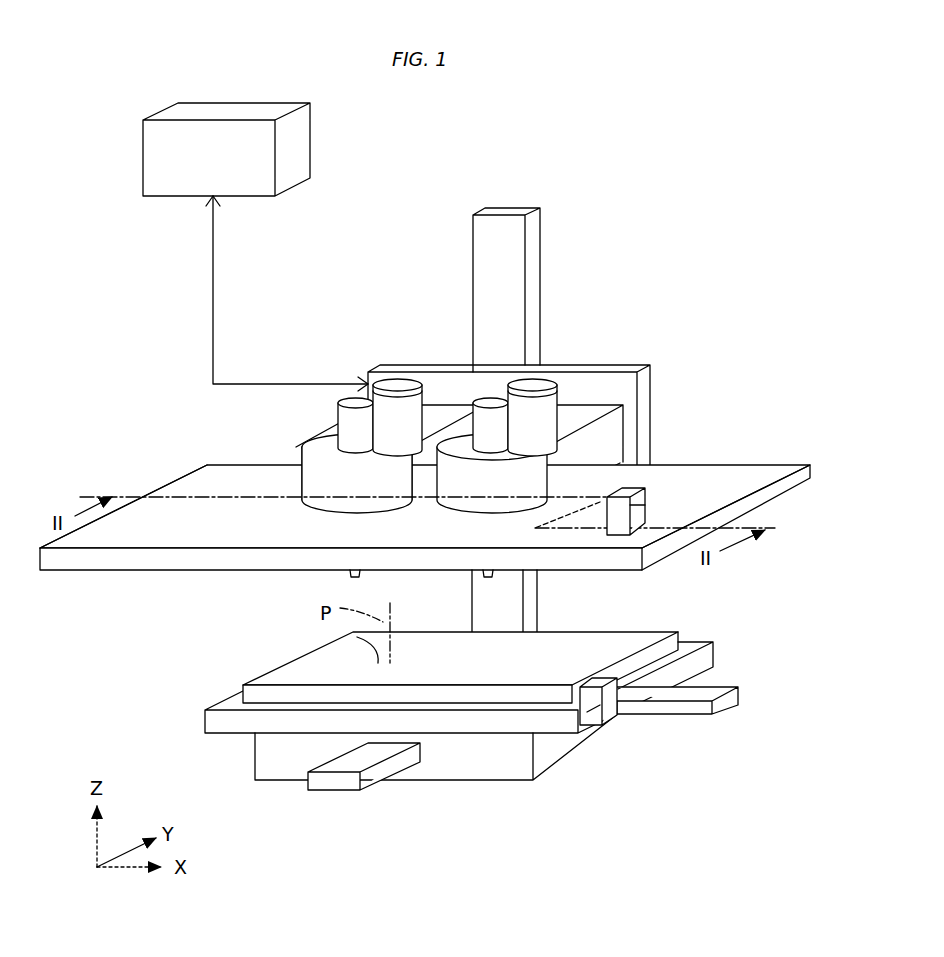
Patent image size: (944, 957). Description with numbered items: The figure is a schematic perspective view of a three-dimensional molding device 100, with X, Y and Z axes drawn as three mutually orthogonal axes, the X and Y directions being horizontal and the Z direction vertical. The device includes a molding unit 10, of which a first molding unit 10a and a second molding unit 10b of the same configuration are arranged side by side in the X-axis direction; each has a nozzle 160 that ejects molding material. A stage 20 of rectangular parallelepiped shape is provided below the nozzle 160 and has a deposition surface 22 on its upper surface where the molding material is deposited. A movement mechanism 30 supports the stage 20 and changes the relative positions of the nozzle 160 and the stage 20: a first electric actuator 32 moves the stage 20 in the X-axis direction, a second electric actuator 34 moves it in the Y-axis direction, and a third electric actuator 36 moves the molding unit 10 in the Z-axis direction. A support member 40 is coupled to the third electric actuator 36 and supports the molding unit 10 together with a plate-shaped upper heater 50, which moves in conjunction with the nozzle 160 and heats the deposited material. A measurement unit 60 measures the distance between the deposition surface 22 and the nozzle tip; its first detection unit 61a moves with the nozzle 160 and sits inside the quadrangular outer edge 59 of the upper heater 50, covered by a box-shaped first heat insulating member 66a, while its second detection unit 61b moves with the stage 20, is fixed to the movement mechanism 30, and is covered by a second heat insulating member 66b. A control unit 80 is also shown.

The three-dimensional molding device 100 is at (748, 289).
The control unit 80 is at (291, 147).
The third electric actuator 36 is at (498, 283).
The support member 40 is at (641, 356).
The molding unit 10 is at (474, 415).
The first molding unit 10a is at (312, 417).
The second molding unit 10b is at (591, 415).
The upper heater 50 is at (192, 490).
The outer edge 59 is at (163, 488).
The measurement unit 60 is at (734, 489).
The first detection unit 61a is at (640, 505).
The first heat insulating member 66a is at (637, 518).
The nozzle 160 is at (350, 574).
The movement mechanism 30 is at (492, 721).
The stage 20 is at (257, 697).
The deposition surface 22 is at (342, 640).
The first electric actuator 32 is at (733, 697).
The second electric actuator 34 is at (340, 787).
The second detection unit 61b is at (598, 706).
The second heat insulating member 66b is at (588, 713).